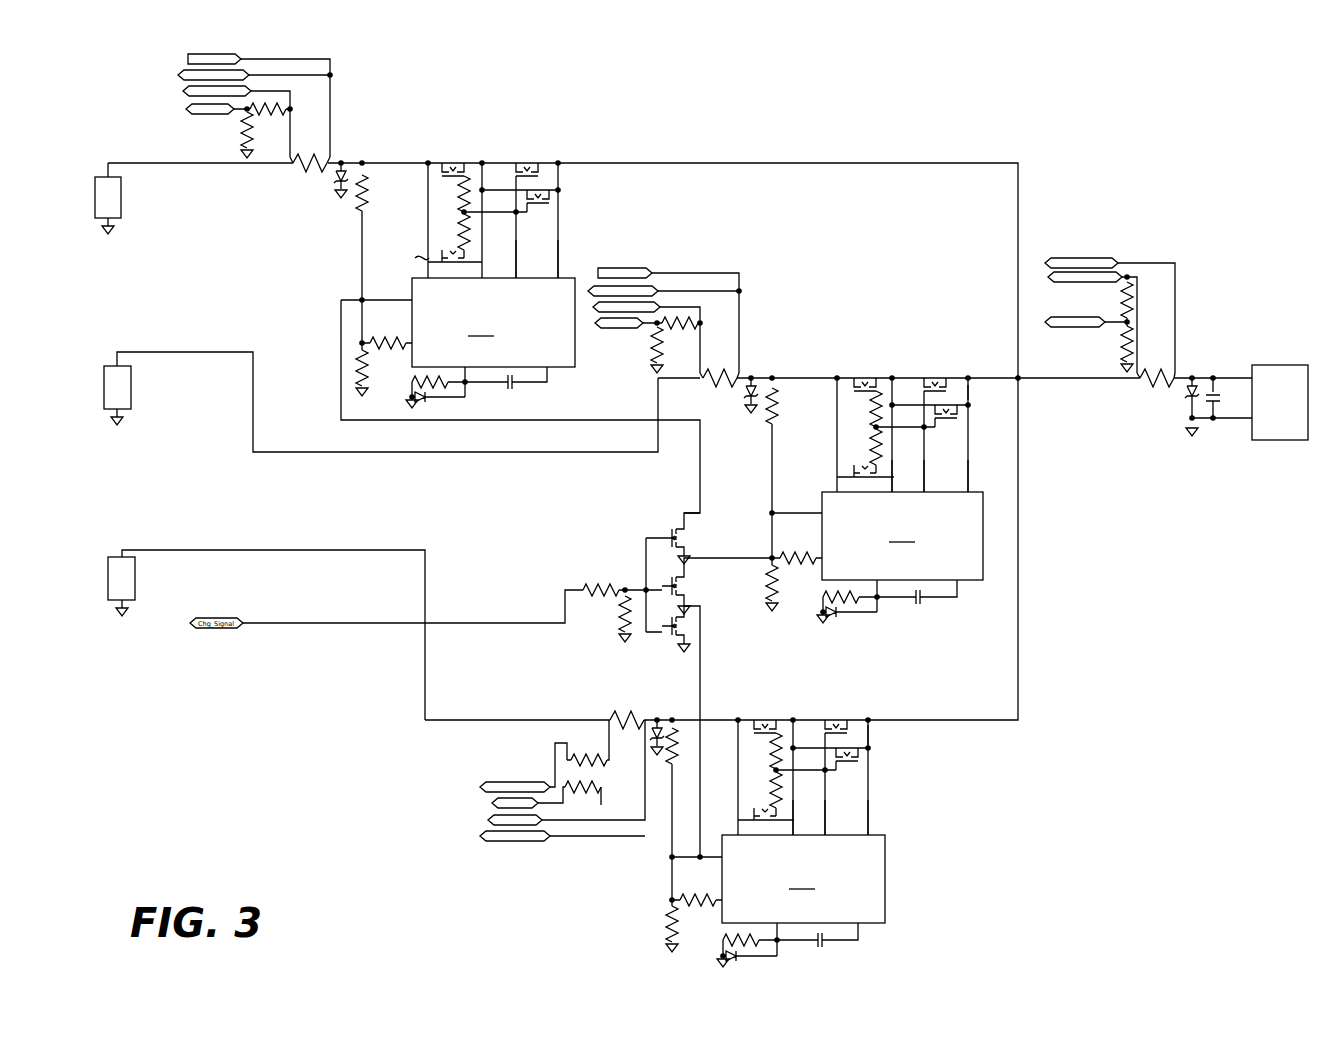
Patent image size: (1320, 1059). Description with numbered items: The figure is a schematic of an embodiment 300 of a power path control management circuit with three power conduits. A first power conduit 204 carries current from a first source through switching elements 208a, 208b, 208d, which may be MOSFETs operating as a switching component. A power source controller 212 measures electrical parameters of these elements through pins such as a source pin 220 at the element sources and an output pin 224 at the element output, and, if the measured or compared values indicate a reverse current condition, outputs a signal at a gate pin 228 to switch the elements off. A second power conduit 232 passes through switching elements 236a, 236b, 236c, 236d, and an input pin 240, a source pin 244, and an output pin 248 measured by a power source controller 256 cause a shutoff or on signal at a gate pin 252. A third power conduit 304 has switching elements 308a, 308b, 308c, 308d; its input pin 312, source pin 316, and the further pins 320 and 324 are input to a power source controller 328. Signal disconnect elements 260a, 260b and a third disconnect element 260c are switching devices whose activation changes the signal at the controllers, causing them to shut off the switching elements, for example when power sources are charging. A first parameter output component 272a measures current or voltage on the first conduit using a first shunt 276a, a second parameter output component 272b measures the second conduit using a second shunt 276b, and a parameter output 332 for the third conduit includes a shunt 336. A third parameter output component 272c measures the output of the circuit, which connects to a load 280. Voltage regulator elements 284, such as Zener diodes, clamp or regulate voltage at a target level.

The first power conduit 204 is at (882, 169).
The switching element 208a is at (446, 163).
The switching element 208b is at (536, 161).
The switching element 208d is at (560, 190).
The power source controller 212 is at (490, 343).
The source pin 220 is at (475, 261).
The output pin 224 is at (558, 254).
The gate pin 228 is at (515, 262).
The second power conduit 232 is at (974, 382).
The switching element 236a is at (854, 373).
The switching element 236b is at (937, 371).
The switching element 236c is at (838, 470).
The switching element 236d is at (963, 400).
The input pin 240 is at (837, 448).
The source pin 244 is at (893, 478).
The output pin 248 is at (972, 474).
The gate pin 252 is at (930, 482).
The power source controller 256 is at (900, 557).
The signal disconnect element 260a is at (670, 527).
The signal disconnect element 260b is at (688, 580).
The third disconnect element 260c is at (672, 649).
The first parameter output component 272a is at (330, 133).
The second parameter output component 272b is at (740, 317).
The third parameter output component 272c is at (1175, 349).
The first shunt 276a is at (310, 171).
The second shunt 276b is at (712, 382).
The load 280 is at (1270, 442).
The voltage regulator element 284 is at (337, 199).
The embodiment of a circuit with three power conduits 300 is at (681, 74).
The third power conduit 304 is at (880, 731).
The switching element 308a is at (761, 717).
The switching element 308b is at (840, 717).
The switching element 308c is at (754, 815).
The switching element 308d is at (868, 746).
The input pin 312 is at (738, 797).
The source pin 316 is at (790, 818).
The conductor 320 is at (879, 817).
The conductor 324 is at (828, 824).
The power source controller 328 is at (801, 901).
The parameter output 332 is at (552, 755).
The shunt 336 is at (616, 718).